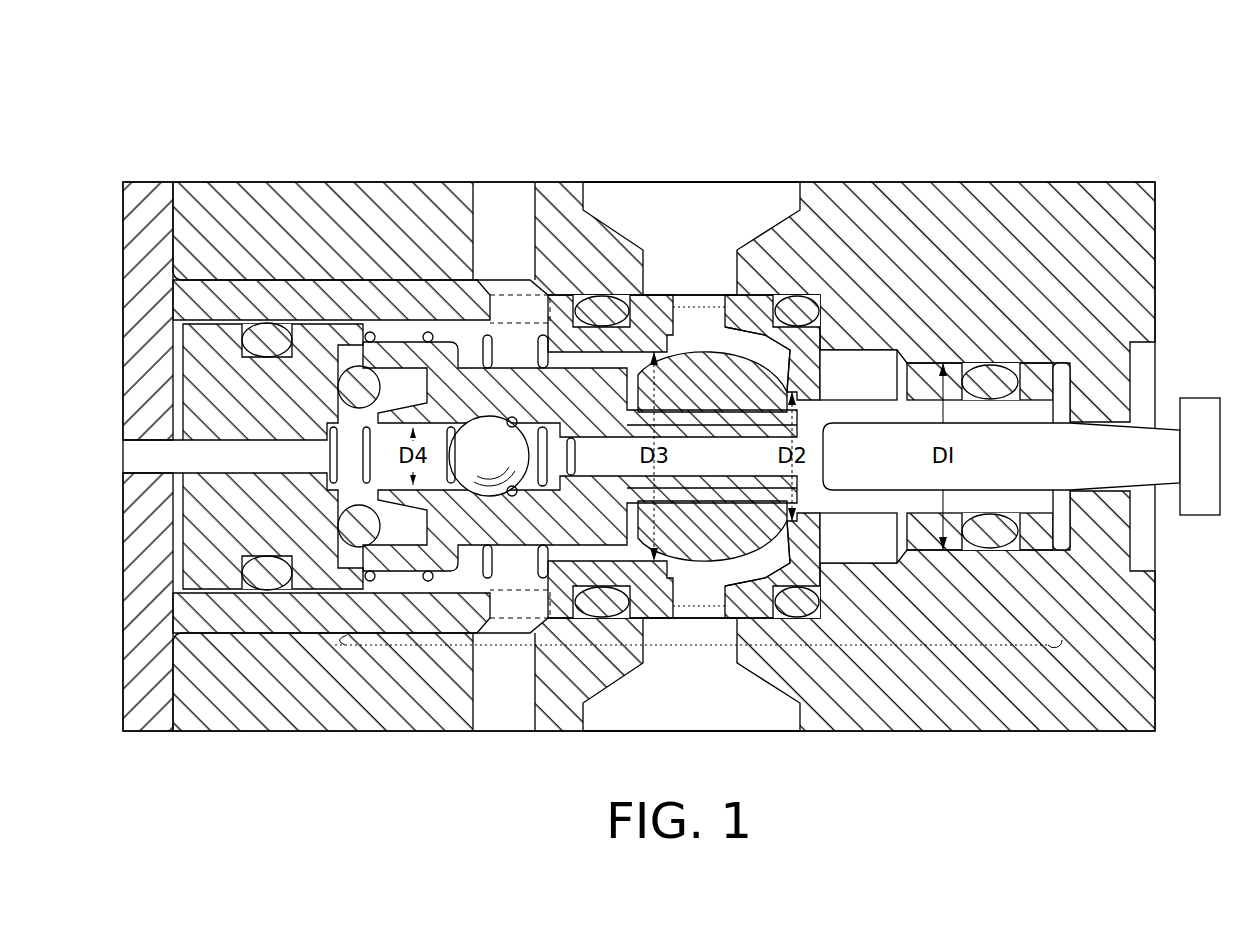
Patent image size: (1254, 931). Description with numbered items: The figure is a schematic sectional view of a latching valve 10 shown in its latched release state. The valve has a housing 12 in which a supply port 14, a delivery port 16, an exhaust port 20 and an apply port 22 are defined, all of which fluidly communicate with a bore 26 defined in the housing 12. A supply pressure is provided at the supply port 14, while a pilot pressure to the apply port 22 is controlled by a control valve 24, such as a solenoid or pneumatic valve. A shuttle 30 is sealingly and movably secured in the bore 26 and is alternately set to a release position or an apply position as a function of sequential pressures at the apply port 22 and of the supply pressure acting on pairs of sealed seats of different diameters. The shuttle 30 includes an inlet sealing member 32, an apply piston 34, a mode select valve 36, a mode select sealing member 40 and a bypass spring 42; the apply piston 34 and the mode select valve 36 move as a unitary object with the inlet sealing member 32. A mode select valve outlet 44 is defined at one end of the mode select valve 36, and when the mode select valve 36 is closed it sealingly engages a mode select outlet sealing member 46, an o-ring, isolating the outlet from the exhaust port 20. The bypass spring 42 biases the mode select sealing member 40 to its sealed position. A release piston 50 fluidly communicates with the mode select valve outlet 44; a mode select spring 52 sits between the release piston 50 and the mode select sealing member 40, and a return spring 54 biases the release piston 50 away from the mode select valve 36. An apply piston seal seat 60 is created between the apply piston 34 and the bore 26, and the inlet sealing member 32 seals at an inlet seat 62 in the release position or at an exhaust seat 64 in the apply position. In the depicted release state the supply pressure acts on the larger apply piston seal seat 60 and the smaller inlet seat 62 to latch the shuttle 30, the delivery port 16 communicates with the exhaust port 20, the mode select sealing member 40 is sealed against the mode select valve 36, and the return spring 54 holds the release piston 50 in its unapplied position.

The latching valve 10 is at (187, 121).
The housing 12 is at (1098, 182).
The supply port 14 is at (665, 715).
The delivery port 16 is at (598, 182).
The exhaust port 20 is at (510, 715).
The apply port 22 is at (1115, 432).
The control valve 24 is at (1200, 410).
The bore 26 is at (870, 362).
The shuttle 30 is at (730, 656).
The inlet sealing member 32 is at (752, 357).
The apply piston 34 is at (943, 365).
The mode select valve 36 is at (603, 383).
The mode select sealing member 40 is at (490, 420).
The bypass spring 42 is at (543, 410).
The mode select valve outlet 44 is at (350, 430).
The mode select outlet sealing member 46 is at (353, 347).
The release piston 50 is at (317, 330).
The mode select spring 52 is at (340, 433).
The return spring 54 is at (373, 332).
The apply piston seal seat 60 is at (1033, 372).
The inlet seat 62 is at (757, 392).
The exhaust seat 64 is at (743, 372).